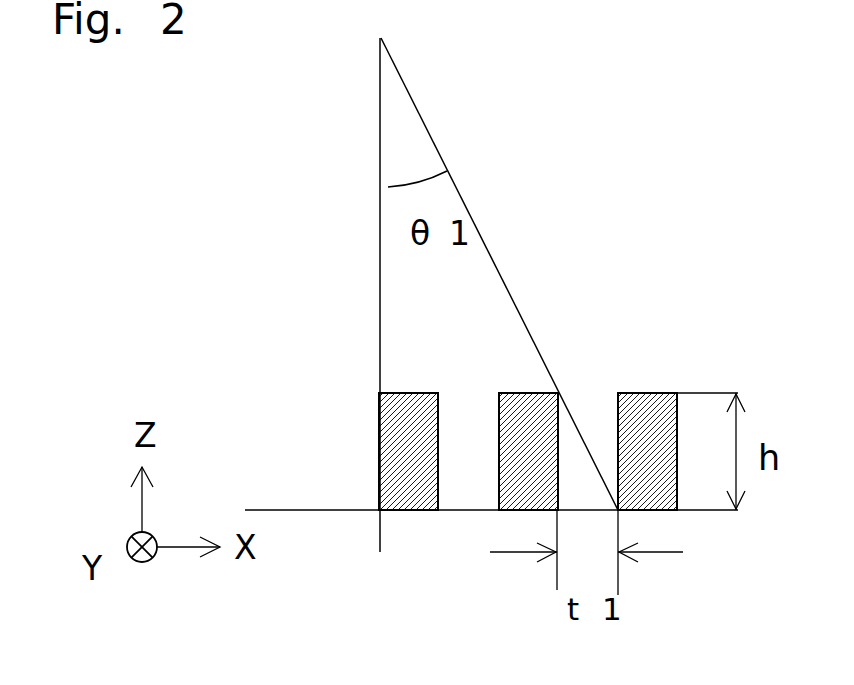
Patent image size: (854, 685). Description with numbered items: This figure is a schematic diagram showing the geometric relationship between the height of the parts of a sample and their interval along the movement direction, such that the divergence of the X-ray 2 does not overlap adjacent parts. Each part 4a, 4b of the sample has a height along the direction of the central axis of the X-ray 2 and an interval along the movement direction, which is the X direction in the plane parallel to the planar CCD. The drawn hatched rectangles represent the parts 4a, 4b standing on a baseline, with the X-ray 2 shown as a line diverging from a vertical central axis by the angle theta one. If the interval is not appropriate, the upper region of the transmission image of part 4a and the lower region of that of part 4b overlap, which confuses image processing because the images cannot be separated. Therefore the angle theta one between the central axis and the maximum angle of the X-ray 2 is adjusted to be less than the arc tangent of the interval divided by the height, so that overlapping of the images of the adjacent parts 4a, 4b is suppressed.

The X-ray 2 is at (461, 197).
The part 4a is at (507, 493).
The part 4b is at (647, 393).